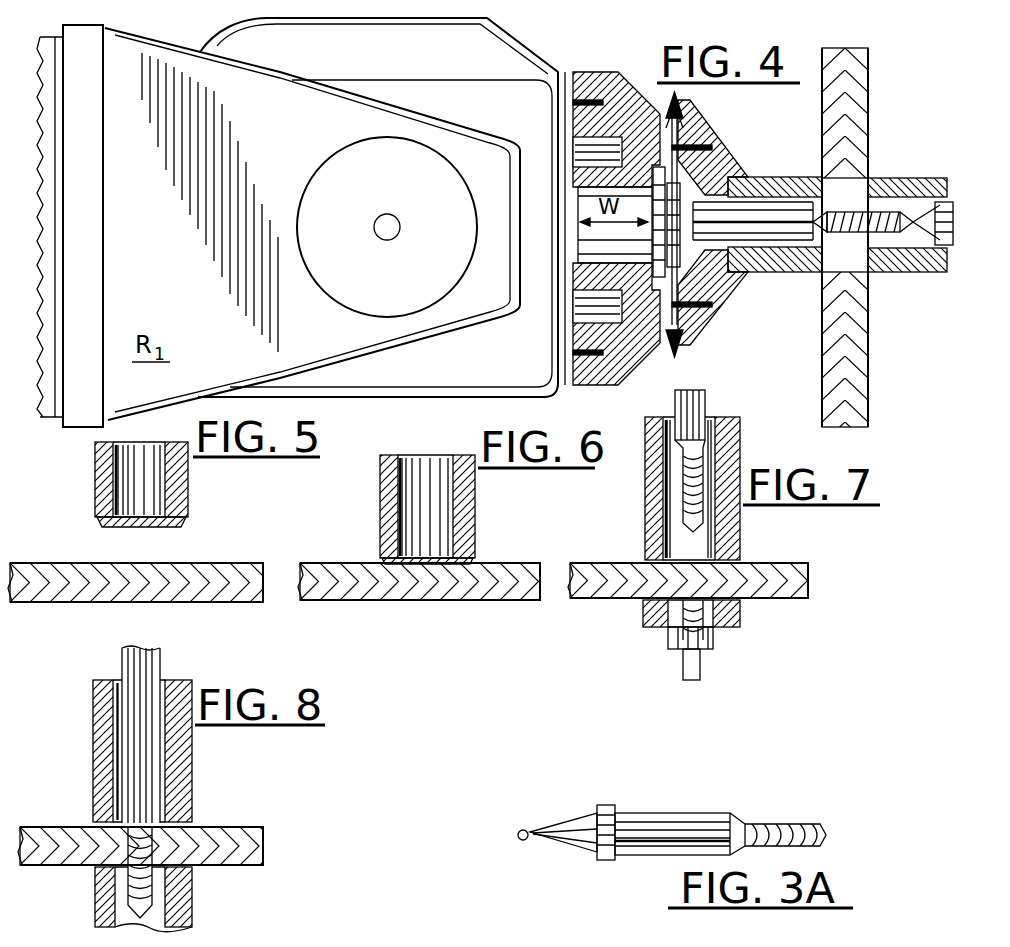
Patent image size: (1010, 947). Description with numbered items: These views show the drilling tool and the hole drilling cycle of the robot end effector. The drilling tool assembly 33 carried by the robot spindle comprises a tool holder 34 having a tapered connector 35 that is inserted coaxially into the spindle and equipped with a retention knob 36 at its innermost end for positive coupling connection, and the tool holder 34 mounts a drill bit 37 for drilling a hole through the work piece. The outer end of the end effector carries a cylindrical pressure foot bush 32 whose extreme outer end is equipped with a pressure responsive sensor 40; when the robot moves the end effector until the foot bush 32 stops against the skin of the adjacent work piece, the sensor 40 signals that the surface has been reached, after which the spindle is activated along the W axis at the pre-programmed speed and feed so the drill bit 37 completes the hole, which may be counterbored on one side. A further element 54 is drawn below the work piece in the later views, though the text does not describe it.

In FIG. 5, the pressure foot bush portion 32 is at (188, 482).
In FIG. 6, the pressure foot bush portion 32 is at (475, 529).
In FIG. 7, the pressure foot bush portion 32 is at (740, 525).
In FIG. 5, the pressure responsive sensor 40 is at (186, 520).
In FIG. 7, the nut 54 is at (742, 608).
In FIG. 8, the nut 54 is at (192, 888).
In FIG. 3A, the drilling tool assembly 33 is at (659, 801).
In FIG. 3A, the tool holder 34 is at (703, 823).
In FIG. 3A, the tapered connector 35 is at (583, 830).
In FIG. 3A, the retention knob 36 is at (521, 831).
In FIG. 3A, the drill bit 37 is at (802, 823).